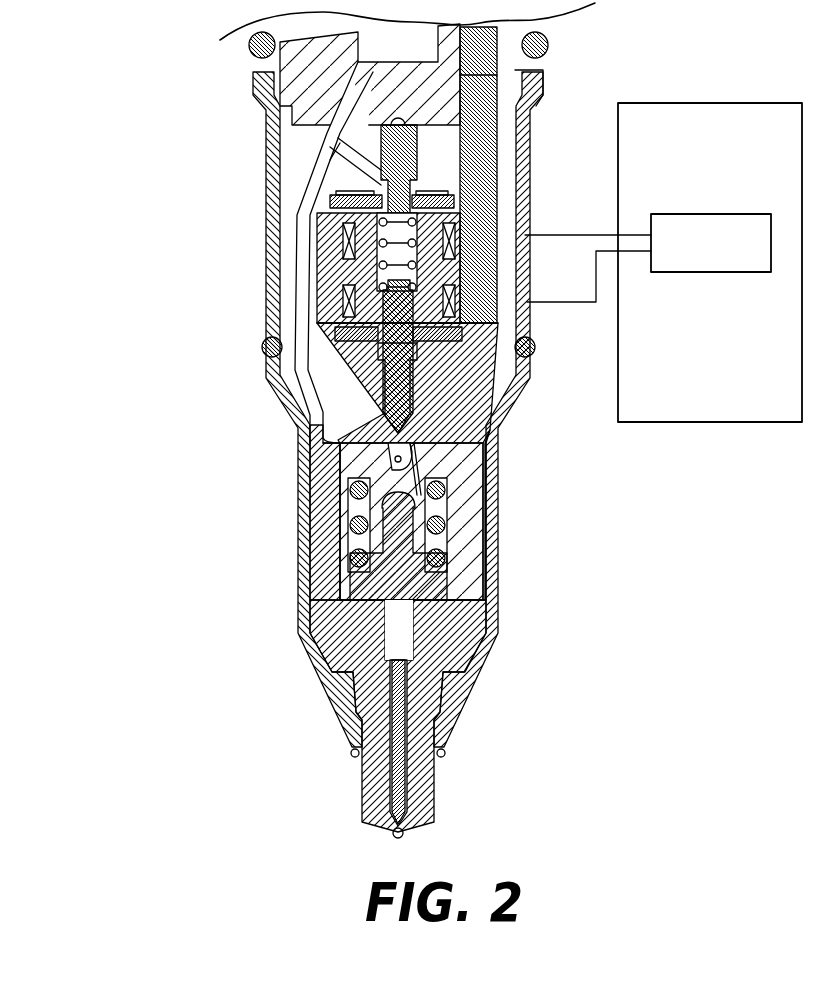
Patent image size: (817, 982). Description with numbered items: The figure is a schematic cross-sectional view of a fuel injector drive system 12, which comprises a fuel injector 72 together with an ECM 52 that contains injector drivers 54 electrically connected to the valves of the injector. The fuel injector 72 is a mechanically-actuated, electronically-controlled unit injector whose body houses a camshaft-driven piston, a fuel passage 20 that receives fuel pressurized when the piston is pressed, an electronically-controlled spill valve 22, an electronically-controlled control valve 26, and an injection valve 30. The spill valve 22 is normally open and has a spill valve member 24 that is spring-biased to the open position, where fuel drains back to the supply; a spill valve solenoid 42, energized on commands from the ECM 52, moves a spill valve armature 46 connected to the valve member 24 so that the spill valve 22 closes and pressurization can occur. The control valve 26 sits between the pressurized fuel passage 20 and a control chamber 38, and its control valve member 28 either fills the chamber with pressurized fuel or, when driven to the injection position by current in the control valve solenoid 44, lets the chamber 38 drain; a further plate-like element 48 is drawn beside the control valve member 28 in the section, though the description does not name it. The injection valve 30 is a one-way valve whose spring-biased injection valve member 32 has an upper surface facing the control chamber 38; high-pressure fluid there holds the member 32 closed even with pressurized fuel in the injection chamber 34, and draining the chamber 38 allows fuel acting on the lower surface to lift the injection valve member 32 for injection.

The fuel injector drive system 12 is at (113, 90).
The fuel passage 20 is at (353, 102).
The spill valve 22 is at (450, 139).
The spill valve member 24 is at (384, 142).
The control valve 26 is at (464, 354).
The control valve member 28 is at (393, 373).
The injection valve 30 is at (470, 551).
The injection valve member 32 is at (403, 612).
The injection chamber 34 is at (412, 675).
The control chamber 38 is at (393, 498).
The spill valve solenoid 42 is at (343, 245).
The control valve solenoid 44 is at (347, 293).
The spill valve armature 46 is at (345, 200).
The lower armature plate 48 is at (340, 333).
The ECM 52 is at (663, 262).
The injector drivers 54 is at (648, 258).
The fuel injector 72 is at (503, 88).